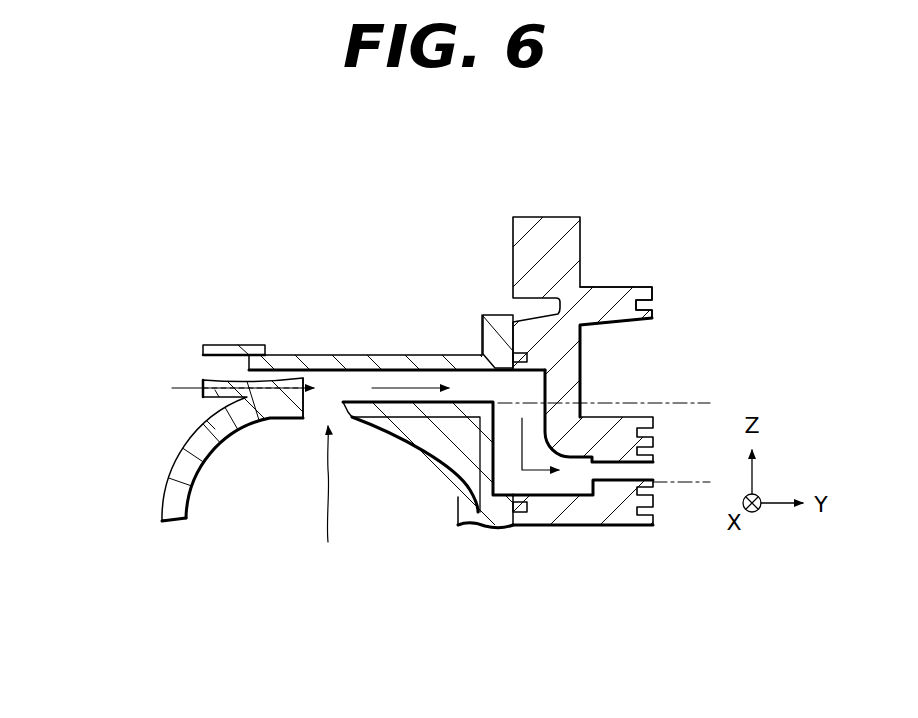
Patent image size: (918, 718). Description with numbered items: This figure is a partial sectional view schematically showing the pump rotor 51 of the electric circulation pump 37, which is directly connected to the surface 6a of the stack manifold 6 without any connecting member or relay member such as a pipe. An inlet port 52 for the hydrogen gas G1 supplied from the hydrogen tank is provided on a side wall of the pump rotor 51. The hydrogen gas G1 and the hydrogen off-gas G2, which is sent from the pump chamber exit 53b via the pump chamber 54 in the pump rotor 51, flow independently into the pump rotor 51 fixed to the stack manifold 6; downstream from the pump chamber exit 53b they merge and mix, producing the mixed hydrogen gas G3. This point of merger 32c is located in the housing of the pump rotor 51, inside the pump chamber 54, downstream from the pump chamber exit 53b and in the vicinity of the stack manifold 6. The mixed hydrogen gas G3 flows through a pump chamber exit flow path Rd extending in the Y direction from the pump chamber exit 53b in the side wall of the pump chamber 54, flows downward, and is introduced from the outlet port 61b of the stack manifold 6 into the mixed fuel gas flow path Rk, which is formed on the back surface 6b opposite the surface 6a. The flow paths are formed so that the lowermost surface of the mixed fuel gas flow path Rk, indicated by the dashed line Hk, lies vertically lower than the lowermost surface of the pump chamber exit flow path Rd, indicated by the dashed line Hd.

The stack manifold 6 is at (543, 217).
The surface 6a is at (513, 257).
The back surface 6b is at (580, 258).
The point of merger 32c is at (390, 378).
The inlet port 52 is at (202, 368).
The pump rotor 51 is at (171, 445).
The electric circulation pump 37 is at (160, 451).
The pump chamber 54 is at (266, 483).
The pump chamber exit 53b is at (313, 415).
The mixed fuel gas flow path Rk is at (617, 470).
The outlet port 61b is at (645, 472).
The pump chamber exit flow path Rd is at (435, 378).
The hydrogen gas G1 is at (310, 377).
The hydrogen off-gas G2 is at (329, 499).
The mixed hydrogen gas G3 is at (417, 378).
The dashed line Hd is at (672, 402).
The dashed line Hk is at (678, 482).